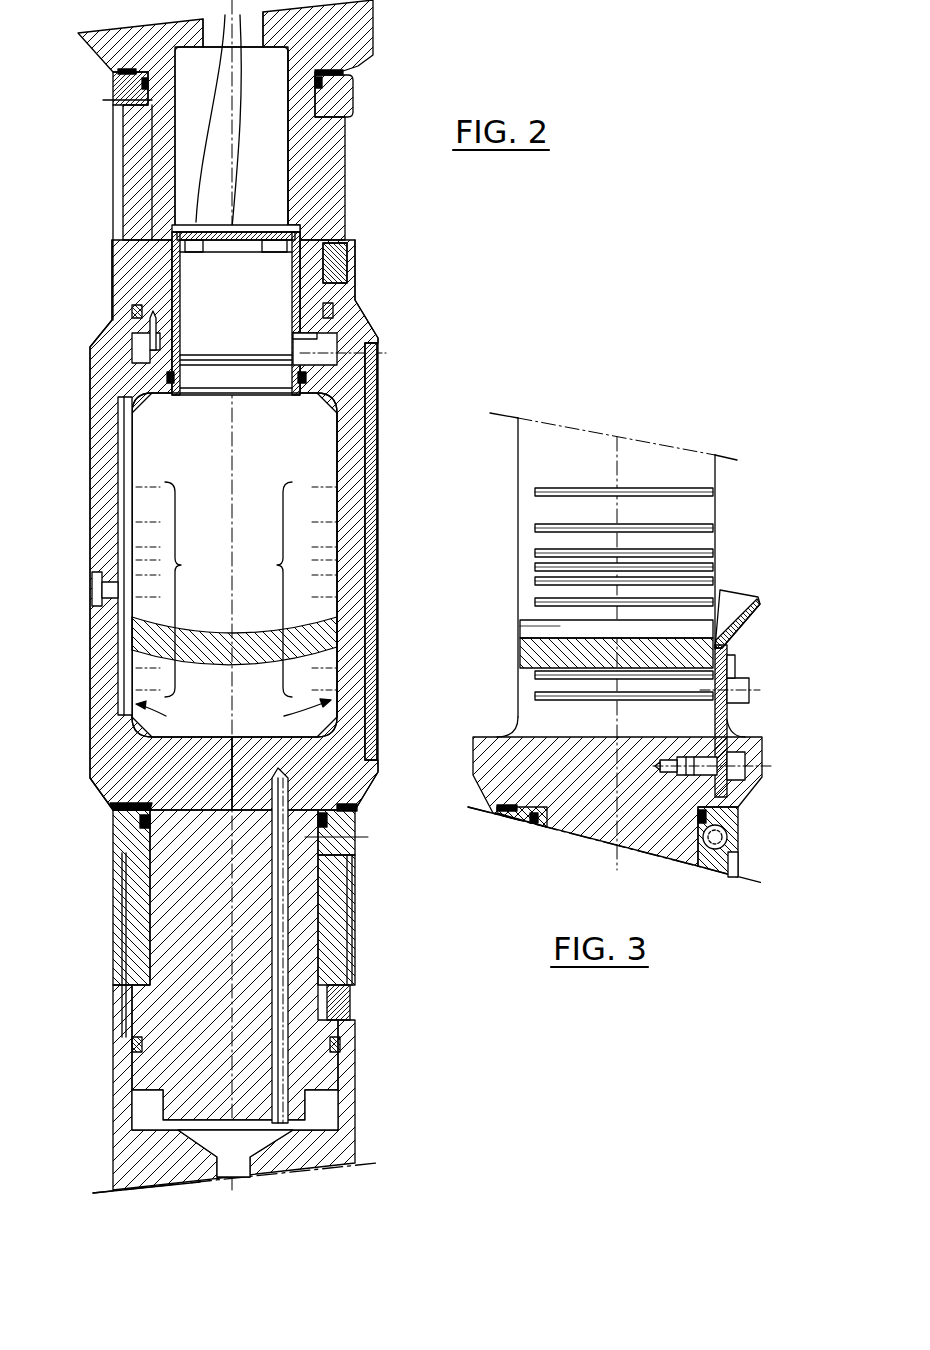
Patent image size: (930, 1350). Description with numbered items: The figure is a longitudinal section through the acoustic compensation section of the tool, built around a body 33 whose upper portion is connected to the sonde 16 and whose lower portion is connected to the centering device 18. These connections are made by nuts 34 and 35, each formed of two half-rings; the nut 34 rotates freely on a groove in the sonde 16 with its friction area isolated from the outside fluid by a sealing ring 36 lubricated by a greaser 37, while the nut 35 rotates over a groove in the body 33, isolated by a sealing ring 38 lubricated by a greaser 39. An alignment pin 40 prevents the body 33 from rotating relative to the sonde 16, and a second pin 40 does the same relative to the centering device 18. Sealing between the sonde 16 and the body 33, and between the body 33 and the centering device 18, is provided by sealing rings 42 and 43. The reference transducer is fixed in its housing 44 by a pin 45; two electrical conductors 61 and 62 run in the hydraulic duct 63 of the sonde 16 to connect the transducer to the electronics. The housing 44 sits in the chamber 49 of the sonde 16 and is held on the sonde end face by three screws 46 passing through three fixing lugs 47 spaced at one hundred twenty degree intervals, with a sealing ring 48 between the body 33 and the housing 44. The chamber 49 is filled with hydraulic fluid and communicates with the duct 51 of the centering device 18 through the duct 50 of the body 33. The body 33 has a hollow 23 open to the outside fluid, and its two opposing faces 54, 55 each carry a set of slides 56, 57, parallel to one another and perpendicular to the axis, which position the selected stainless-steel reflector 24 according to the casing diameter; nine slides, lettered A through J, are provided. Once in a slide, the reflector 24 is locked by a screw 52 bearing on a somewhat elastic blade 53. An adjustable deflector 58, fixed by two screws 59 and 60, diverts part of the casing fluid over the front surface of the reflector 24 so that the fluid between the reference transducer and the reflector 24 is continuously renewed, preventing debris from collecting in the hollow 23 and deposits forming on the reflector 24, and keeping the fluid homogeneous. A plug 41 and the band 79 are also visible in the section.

In FIG. 2, the sonde 16 is at (367, 27).
In FIG. 2, the centering device 18 is at (346, 1094).
In FIG. 2, the hollow 23 is at (313, 440).
In FIG. 2, the reference reflector 24 is at (320, 640).
In FIG. 3, the reference reflector 24 is at (533, 658).
In FIG. 2, the body 33 is at (360, 325).
In FIG. 2, the nut 34 is at (353, 95).
In FIG. 2, the nut 35 is at (338, 895).
In FIG. 2, the sealing ring 36 is at (118, 76).
In FIG. 2, the greaser 37 is at (113, 101).
In FIG. 2, the sealing ring 38 is at (148, 823).
In FIG. 2, the greaser 39 is at (352, 830).
In FIG. 3, the greaser 39 is at (697, 848).
In FIG. 2, the alignment pin 40 is at (347, 256).
In FIG. 2, the plug 41 is at (338, 1003).
In FIG. 2, the sealing ring 42 is at (138, 308).
In FIG. 2, the sealing ring 43 is at (137, 1046).
In FIG. 2, the housing 44 is at (293, 298).
In FIG. 2, the pin 45 is at (270, 234).
In FIG. 2, the screw 46 is at (158, 335).
In FIG. 2, the fixing lug 47 is at (148, 363).
In FIG. 2, the sealing ring 48 is at (306, 381).
In FIG. 2, the chamber 49 is at (277, 138).
In FIG. 2, the duct 50 is at (368, 742).
In FIG. 2, the duct 51 is at (245, 1172).
In FIG. 2, the screw 52 is at (93, 598).
In FIG. 2, the blade 53 is at (124, 498).
In FIG. 2, the face of the hollow 54 is at (293, 715).
In FIG. 3, the face of the hollow 54 is at (546, 462).
In FIG. 2, the face of the hollow 55 is at (165, 714).
In FIG. 2, the set of slides 56 is at (290, 589).
In FIG. 2, the set of slides 57 is at (175, 589).
In FIG. 3, the deflector 58 is at (733, 623).
In FIG. 3, the screw 59 is at (743, 698).
In FIG. 3, the screw 60 is at (740, 768).
In FIG. 2, the electrical conductor 61 is at (205, 151).
In FIG. 2, the electrical conductor 62 is at (202, 197).
In FIG. 2, the hydraulic duct 63 is at (215, 32).
In FIG. 2, the band 79 is at (205, 378).